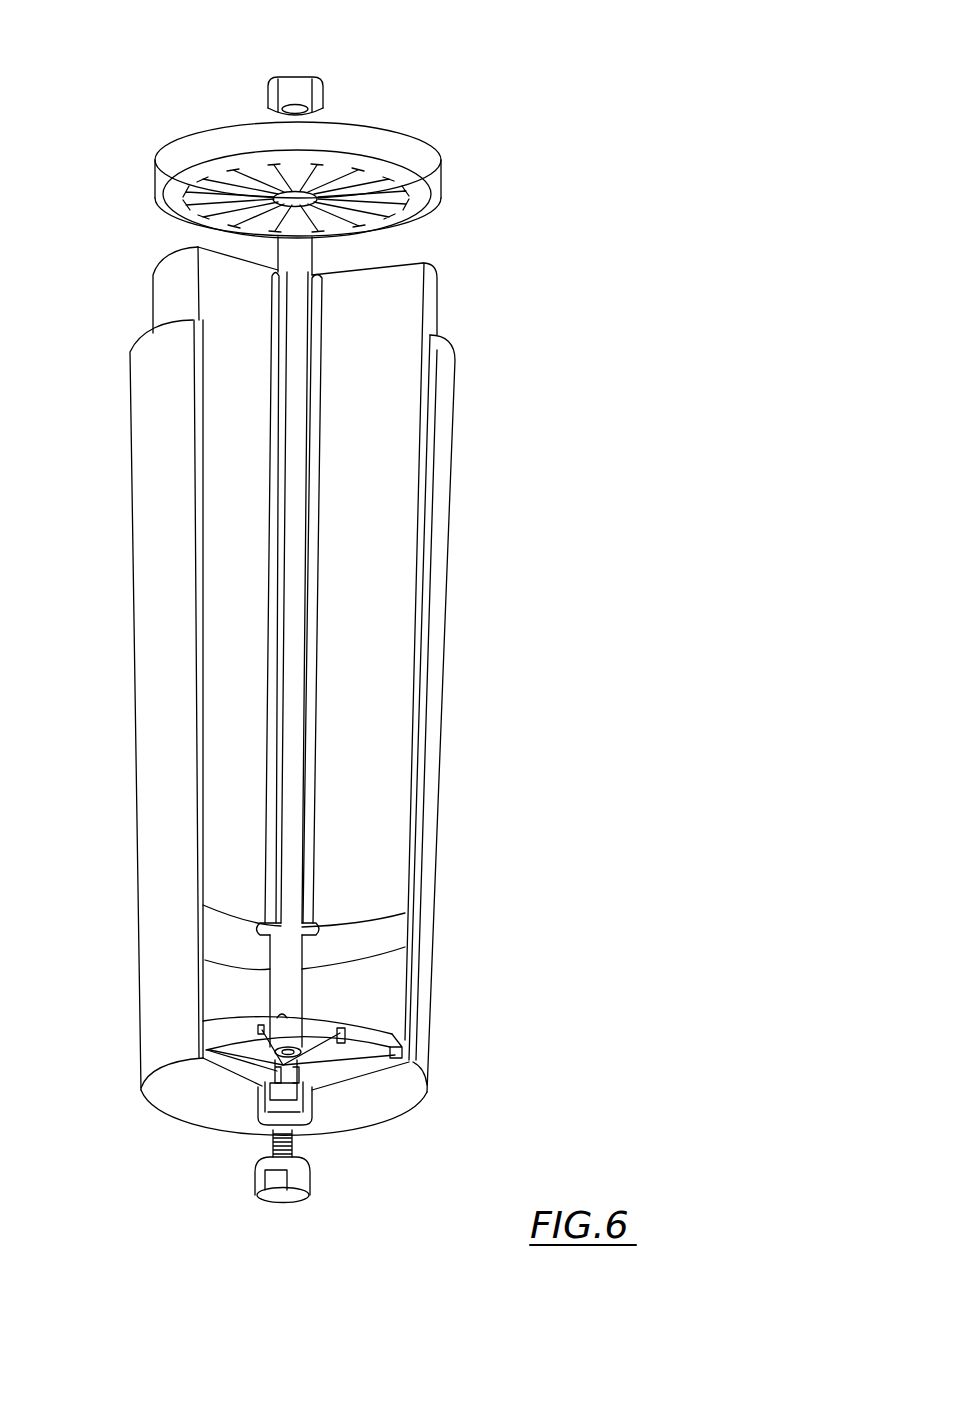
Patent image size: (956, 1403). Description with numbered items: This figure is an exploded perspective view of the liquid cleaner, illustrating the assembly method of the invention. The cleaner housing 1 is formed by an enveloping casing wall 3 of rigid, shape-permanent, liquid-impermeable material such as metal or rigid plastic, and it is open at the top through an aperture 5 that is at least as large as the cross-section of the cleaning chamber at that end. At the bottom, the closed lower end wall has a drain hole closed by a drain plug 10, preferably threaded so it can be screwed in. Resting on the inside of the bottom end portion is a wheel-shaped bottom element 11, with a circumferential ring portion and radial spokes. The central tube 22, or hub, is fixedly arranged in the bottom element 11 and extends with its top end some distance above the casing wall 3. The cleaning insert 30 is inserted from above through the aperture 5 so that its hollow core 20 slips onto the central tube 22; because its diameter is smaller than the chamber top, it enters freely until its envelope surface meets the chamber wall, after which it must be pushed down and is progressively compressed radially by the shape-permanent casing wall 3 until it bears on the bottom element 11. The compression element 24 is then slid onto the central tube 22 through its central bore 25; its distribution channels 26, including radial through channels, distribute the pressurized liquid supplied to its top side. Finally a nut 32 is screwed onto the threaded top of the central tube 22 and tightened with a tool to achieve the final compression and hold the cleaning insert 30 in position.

The cleaner housing 1 is at (443, 720).
The casing wall 3 is at (433, 648).
The aperture 5 is at (148, 332).
The drain plug 10 is at (302, 1180).
The bottom element 11 is at (390, 1027).
The hollow core 20 is at (312, 583).
The central tube 22 is at (302, 256).
The compression element 24 is at (447, 175).
The central bore 25 is at (312, 175).
The distribution channels 26 is at (303, 200).
The cleaning insert 30 is at (437, 285).
The nut 32 is at (320, 95).